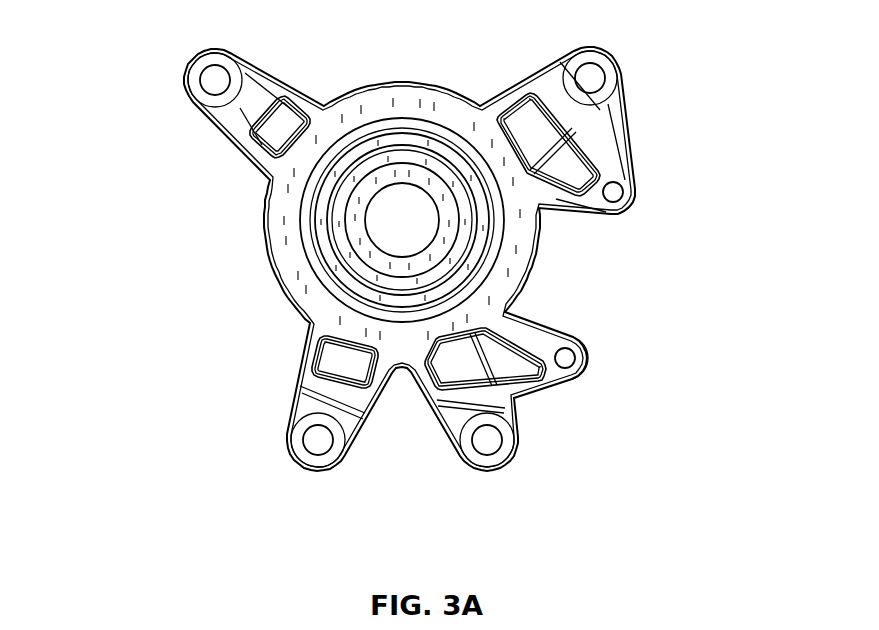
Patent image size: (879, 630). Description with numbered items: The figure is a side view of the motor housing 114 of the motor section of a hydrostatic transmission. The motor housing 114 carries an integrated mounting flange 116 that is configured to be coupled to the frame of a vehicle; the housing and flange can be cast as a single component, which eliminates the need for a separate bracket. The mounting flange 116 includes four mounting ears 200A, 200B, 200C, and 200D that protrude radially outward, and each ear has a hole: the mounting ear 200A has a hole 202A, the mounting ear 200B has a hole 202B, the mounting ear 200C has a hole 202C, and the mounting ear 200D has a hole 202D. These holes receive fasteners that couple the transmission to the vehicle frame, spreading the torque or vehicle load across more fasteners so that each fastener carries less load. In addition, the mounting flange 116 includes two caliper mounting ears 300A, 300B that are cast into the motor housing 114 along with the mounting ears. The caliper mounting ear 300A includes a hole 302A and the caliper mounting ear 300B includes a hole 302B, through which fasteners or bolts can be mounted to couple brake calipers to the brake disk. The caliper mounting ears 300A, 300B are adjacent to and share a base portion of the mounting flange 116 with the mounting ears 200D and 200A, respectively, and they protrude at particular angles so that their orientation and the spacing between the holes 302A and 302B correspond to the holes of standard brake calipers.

The motor housing 114 is at (347, 72).
The mounting flange 116 is at (490, 92).
The mounting ear 200A is at (500, 480).
The mounting ear 200B is at (273, 470).
The mounting ear 200C is at (205, 133).
The mounting ear 200D is at (612, 120).
The hole 202A is at (485, 445).
The hole 202B is at (320, 445).
The hole 202C is at (214, 79).
The hole 202D is at (592, 80).
The caliper mounting ear 300A is at (625, 228).
The caliper mounting ear 300B is at (595, 332).
The hole 302A is at (618, 195).
The hole 302B is at (568, 360).